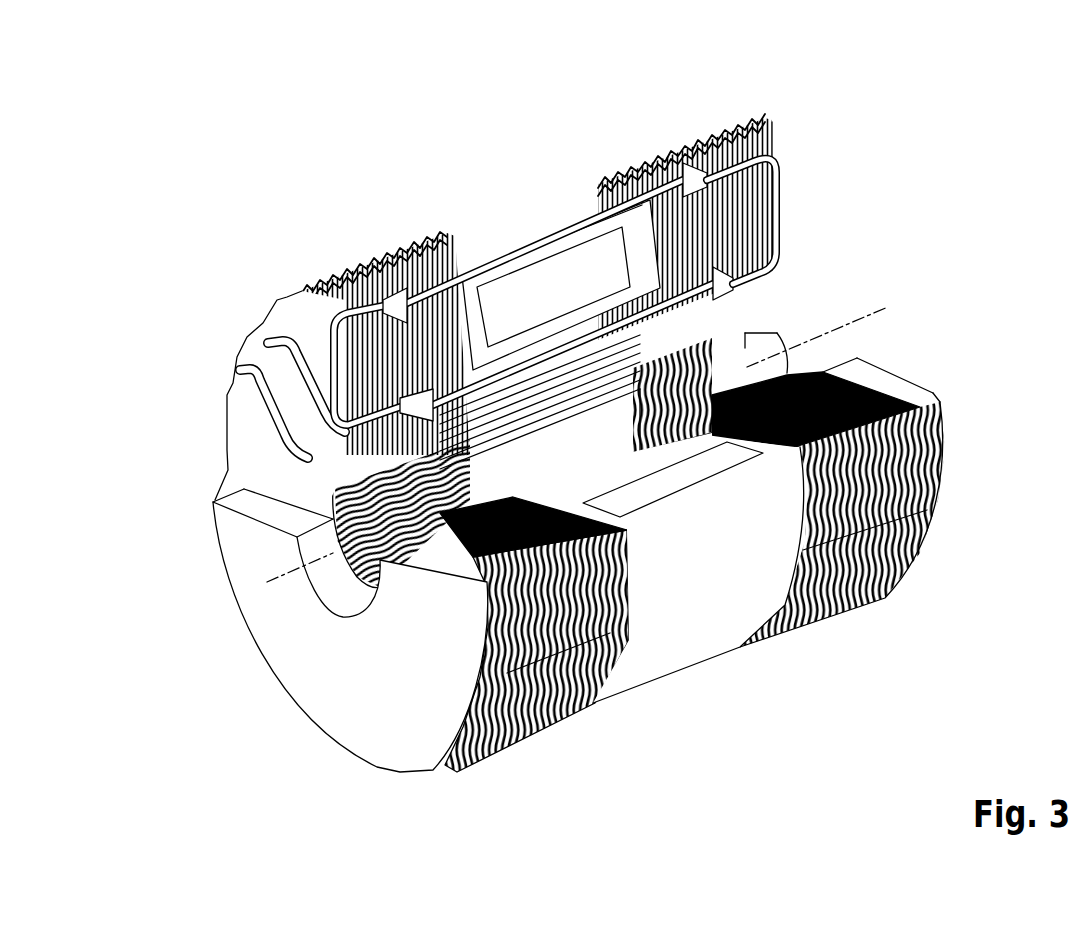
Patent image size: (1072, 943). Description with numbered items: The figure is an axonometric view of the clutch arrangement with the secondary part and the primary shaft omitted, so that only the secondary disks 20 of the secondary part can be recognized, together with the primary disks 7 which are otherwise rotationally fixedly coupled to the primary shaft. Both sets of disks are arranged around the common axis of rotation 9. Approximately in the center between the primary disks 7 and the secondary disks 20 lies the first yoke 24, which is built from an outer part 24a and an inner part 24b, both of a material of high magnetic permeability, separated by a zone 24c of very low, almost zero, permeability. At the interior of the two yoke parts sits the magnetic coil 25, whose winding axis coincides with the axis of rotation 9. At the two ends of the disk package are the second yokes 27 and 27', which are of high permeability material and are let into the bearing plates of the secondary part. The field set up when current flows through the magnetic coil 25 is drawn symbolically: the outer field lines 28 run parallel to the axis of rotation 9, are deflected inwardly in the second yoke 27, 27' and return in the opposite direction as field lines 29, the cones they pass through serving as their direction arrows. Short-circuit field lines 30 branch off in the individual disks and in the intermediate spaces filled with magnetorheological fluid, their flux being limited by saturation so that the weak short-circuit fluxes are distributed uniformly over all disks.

The primary disk 7 is at (300, 535).
The axis of rotation 9 is at (862, 317).
The secondary disk 20 is at (303, 327).
The first yoke 24 is at (478, 196).
The outer part 24a is at (585, 208).
The inner part 24b is at (753, 187).
The zone of very low permeability 24c is at (418, 248).
The magnetic coil 25 is at (508, 307).
The second yoke 27 is at (306, 637).
The second yoke 27' is at (822, 515).
The outer field line 28 is at (547, 240).
The field line 29 is at (560, 348).
The short-circuit field line 30 is at (312, 378).